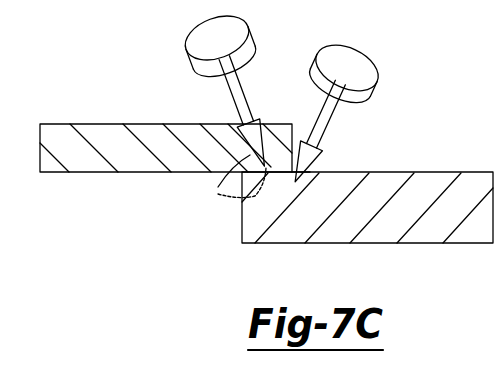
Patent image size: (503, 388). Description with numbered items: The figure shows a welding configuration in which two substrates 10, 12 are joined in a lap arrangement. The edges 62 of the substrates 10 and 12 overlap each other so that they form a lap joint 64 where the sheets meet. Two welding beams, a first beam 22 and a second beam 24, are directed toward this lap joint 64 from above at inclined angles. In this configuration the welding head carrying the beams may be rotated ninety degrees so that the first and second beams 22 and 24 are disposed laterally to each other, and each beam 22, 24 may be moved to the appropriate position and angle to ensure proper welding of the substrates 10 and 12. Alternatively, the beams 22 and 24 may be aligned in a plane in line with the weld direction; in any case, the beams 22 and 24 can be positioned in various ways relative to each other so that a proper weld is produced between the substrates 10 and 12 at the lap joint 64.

The substrate 10 is at (418, 233).
The substrate 12 is at (83, 164).
The first beam 22 is at (338, 124).
The second beam 24 is at (220, 88).
The edges 62 is at (258, 197).
The lap joint 64 is at (299, 176).